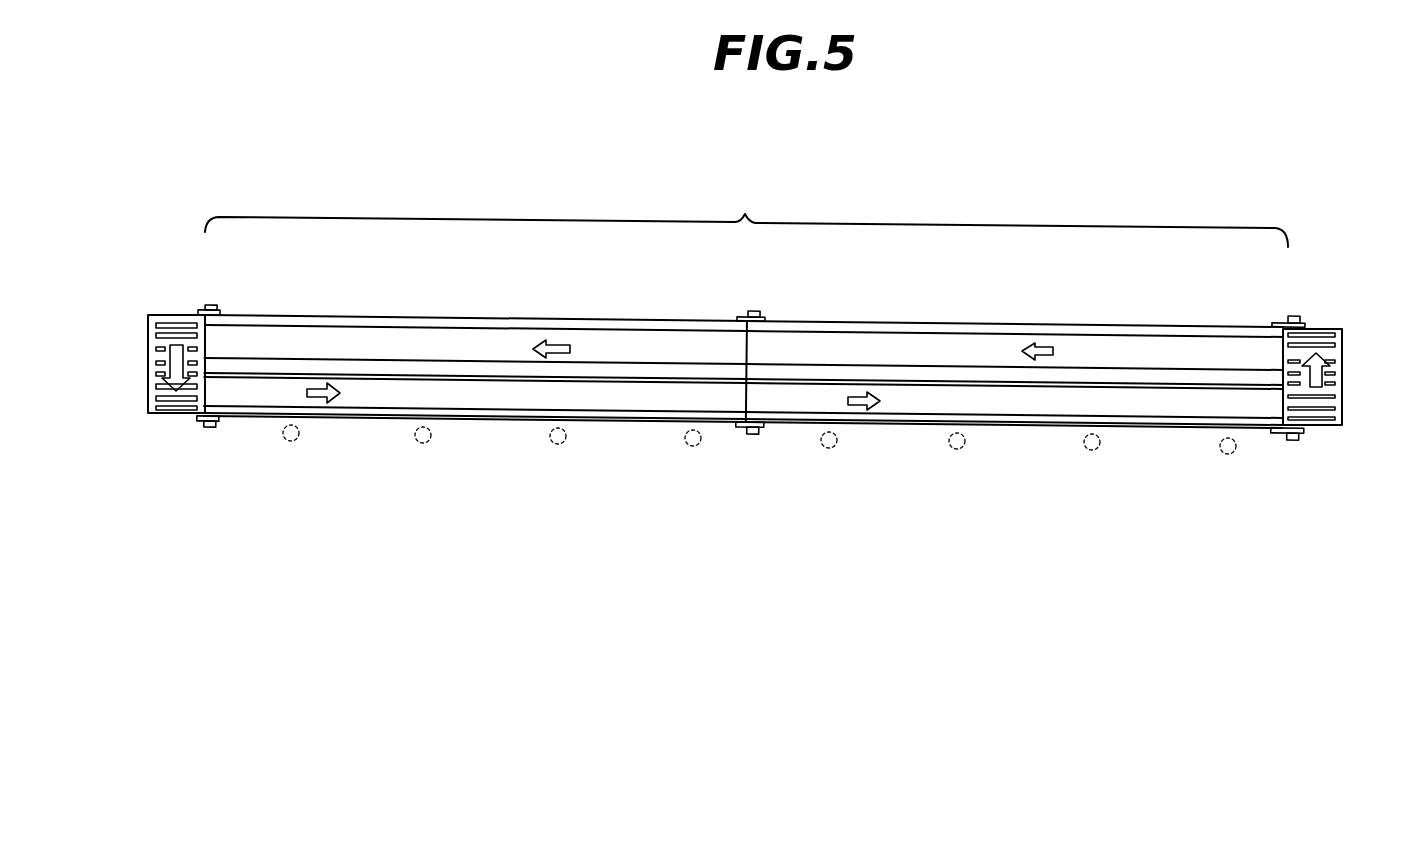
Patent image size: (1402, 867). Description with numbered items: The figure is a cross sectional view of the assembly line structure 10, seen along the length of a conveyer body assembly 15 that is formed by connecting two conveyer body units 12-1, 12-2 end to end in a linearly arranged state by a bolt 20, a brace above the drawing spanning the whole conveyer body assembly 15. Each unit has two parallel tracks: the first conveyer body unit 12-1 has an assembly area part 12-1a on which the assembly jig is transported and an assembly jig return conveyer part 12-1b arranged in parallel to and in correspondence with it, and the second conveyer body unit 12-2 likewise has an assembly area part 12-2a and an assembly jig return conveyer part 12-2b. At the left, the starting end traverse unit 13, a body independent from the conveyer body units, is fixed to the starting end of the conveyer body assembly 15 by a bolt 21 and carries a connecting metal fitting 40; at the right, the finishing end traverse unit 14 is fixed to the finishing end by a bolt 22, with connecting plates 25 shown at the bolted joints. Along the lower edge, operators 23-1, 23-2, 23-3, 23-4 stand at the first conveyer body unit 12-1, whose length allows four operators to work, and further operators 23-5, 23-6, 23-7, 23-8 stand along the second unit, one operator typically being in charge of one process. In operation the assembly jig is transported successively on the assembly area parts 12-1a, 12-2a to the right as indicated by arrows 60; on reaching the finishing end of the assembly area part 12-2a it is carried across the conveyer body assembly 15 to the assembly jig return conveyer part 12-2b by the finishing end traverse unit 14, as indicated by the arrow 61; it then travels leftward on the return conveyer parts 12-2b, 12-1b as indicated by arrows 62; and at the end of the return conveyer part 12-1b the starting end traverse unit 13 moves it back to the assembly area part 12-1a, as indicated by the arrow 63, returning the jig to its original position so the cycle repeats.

The assembly line structure 10 is at (1162, 215).
The conveyer body unit 12-1 is at (603, 314).
The assembly area part 12-1a is at (488, 398).
The assembly jig return conveyer part 12-1b is at (448, 345).
The conveyer body unit 12-2 is at (1053, 322).
The assembly area part 12-2a is at (1152, 404).
The assembly jig return conveyer part 12-2b is at (1155, 350).
The starting end traverse unit 13 is at (146, 348).
The finishing end traverse unit 14 is at (1348, 342).
The conveyer body assembly 15 is at (746, 214).
The bolt 20 is at (763, 312).
The bolt 21 is at (219, 305).
The bolt 22 is at (1296, 316).
The operator 23-1 is at (290, 441).
The operator 23-2 is at (422, 443).
The operator 23-3 is at (557, 444).
The operator 23-4 is at (689, 446).
The operator 23-5 is at (832, 448).
The operator 23-6 is at (959, 449).
The operator 23-7 is at (1090, 450).
The operator 23-8 is at (1226, 454).
The connecting plate 25 is at (742, 318).
The connecting metal fitting 40 is at (207, 311).
The arrow 60 is at (325, 404).
The arrow 61 is at (1340, 372).
The arrow 62 is at (555, 340).
The arrow 63 is at (152, 362).